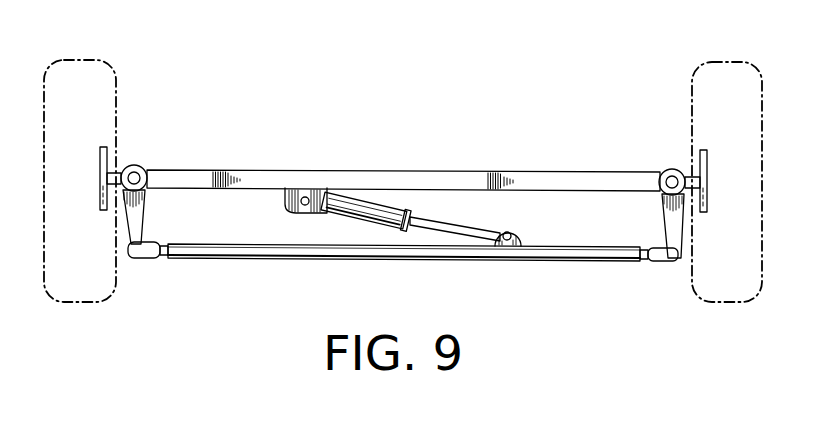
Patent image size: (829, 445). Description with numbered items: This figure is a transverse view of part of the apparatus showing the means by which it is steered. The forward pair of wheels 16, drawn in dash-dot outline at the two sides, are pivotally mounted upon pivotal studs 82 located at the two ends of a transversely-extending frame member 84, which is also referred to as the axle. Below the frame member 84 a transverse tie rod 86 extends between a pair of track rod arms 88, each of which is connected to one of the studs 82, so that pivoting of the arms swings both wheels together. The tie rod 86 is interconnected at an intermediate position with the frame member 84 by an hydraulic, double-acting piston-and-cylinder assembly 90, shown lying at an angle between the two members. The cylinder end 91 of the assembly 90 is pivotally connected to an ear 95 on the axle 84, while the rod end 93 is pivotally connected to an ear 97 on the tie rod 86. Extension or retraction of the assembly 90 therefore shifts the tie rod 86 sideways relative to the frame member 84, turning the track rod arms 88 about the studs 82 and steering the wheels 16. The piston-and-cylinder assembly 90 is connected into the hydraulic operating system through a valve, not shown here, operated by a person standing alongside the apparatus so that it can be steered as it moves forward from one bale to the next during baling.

The forward pair of wheels 16 is at (88, 59).
The pivotal studs 82 is at (138, 165).
The transversely-extending frame member 84 is at (395, 178).
The transverse tie rod 86 is at (590, 255).
The track rod arms 88 is at (138, 212).
The hydraulic double-acting piston-and-cylinder assembly 90 is at (396, 209).
The cylinder end 91 is at (340, 200).
The rod end 93 is at (440, 218).
The ear 95 is at (287, 201).
The ear 97 is at (525, 243).